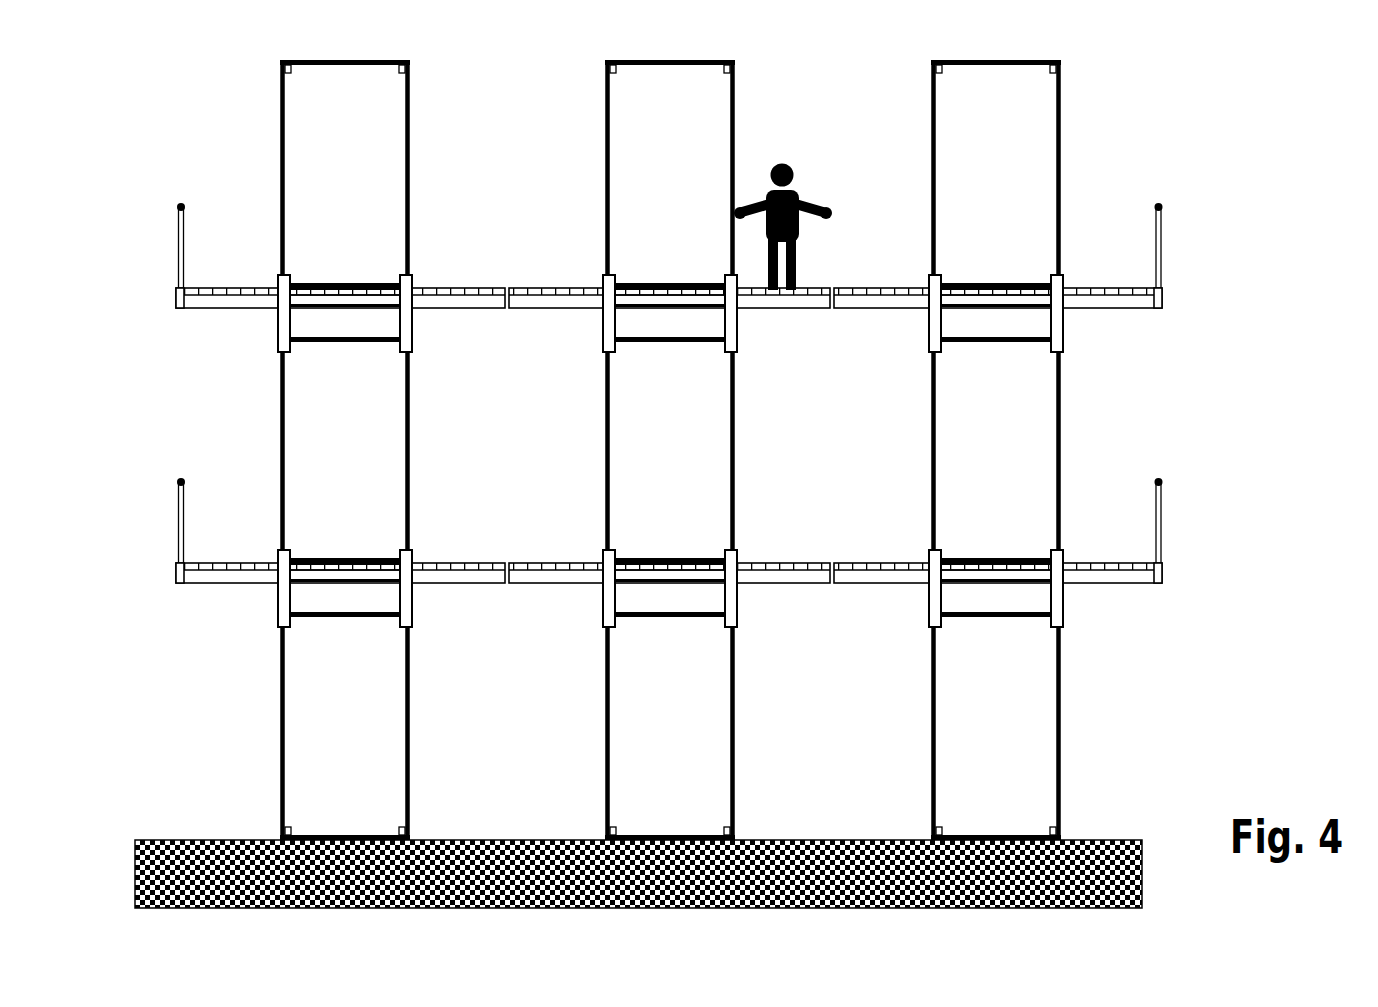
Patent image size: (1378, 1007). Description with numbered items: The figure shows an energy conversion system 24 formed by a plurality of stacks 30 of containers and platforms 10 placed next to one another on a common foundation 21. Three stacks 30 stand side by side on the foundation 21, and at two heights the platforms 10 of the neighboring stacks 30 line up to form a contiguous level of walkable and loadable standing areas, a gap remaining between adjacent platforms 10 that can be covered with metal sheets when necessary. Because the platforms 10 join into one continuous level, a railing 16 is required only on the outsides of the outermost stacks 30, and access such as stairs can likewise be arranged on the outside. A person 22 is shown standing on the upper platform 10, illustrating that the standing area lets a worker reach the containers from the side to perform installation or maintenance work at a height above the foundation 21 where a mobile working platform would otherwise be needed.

The platform 10 is at (250, 540).
The railing 16 is at (1158, 253).
The foundation 21 is at (1097, 845).
The person 22 is at (805, 198).
The energy conversion system 24 is at (662, 420).
The stack 30 is at (443, 45).